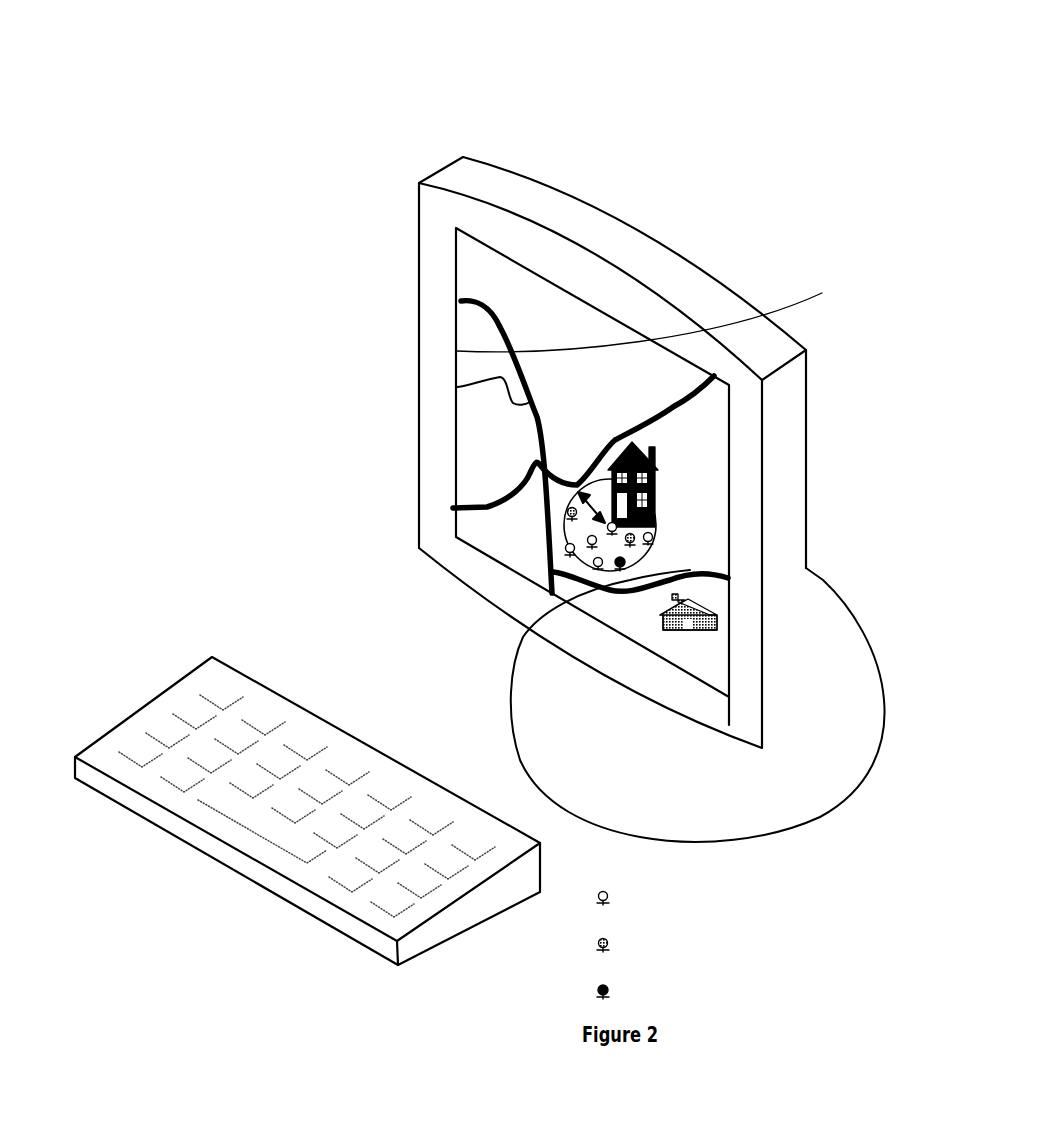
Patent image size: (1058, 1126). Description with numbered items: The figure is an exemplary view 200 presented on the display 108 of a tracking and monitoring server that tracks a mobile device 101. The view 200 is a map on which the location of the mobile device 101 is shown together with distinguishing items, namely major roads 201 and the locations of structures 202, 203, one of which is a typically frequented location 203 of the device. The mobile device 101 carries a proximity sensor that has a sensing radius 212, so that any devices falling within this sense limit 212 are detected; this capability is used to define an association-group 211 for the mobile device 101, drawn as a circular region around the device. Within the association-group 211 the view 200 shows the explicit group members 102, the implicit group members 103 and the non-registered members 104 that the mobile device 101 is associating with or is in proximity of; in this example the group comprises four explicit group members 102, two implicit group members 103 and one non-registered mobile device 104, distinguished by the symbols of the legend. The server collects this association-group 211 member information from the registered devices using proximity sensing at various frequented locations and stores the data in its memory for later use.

The exemplary view 200 is at (403, 66).
The display 108 is at (562, 292).
The mobile device 101 is at (653, 530).
The major roads 201 is at (712, 397).
The association-group 211 is at (563, 528).
The sensing radius 212 is at (567, 483).
The typically frequented location 203 is at (657, 467).
The structure 202 is at (713, 602).
The explicit group members 102 is at (568, 552).
The implicit group members 103 is at (657, 562).
The non-registered members 104 is at (620, 562).